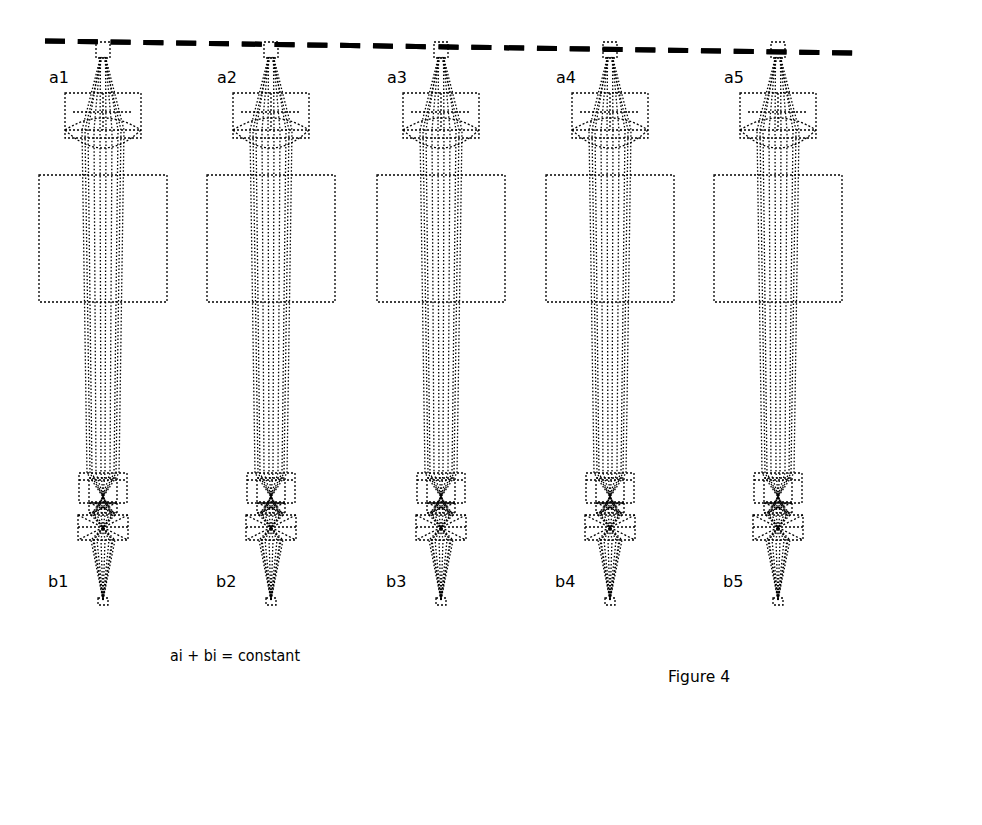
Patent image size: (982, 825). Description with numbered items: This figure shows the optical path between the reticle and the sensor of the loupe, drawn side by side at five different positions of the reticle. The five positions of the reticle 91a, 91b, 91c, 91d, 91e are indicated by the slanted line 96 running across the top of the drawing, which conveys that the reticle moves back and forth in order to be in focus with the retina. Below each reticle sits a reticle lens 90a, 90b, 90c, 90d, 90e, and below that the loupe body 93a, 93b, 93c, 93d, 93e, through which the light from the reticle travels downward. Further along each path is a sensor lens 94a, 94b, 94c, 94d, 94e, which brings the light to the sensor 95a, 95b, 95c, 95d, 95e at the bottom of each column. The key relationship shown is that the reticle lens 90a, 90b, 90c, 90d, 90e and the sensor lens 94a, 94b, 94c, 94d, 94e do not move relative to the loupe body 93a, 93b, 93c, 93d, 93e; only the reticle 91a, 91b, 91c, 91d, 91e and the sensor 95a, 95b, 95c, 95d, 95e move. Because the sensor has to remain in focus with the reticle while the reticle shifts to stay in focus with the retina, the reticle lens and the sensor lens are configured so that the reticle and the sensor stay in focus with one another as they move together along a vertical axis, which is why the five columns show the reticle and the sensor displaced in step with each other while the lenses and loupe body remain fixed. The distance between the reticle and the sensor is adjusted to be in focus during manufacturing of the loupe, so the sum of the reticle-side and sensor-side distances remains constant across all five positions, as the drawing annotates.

The reticle lens 90a is at (63, 138).
The reticle lens 90b is at (231, 138).
The reticle lens 90c is at (401, 138).
The reticle lens 90d is at (570, 138).
The reticle lens 90e is at (738, 138).
The reticle 91a is at (103, 56).
The reticle 91b is at (271, 56).
The reticle 91c is at (441, 56).
The reticle 91d is at (610, 56).
The reticle 91e is at (778, 56).
The loupe body 93a is at (120, 303).
The loupe body 93b is at (288, 303).
The loupe body 93c is at (458, 303).
The loupe body 93d is at (627, 303).
The loupe body 93e is at (795, 303).
The sensor lens 94a is at (118, 503).
The sensor lens 94b is at (286, 503).
The sensor lens 94c is at (456, 503).
The sensor lens 94d is at (625, 503).
The sensor lens 94e is at (793, 503).
The sensor 95a is at (101, 604).
The sensor 95b is at (269, 604).
The sensor 95c is at (439, 604).
The sensor 95d is at (608, 604).
The sensor 95e is at (776, 604).
The slanted line 96 is at (818, 53).